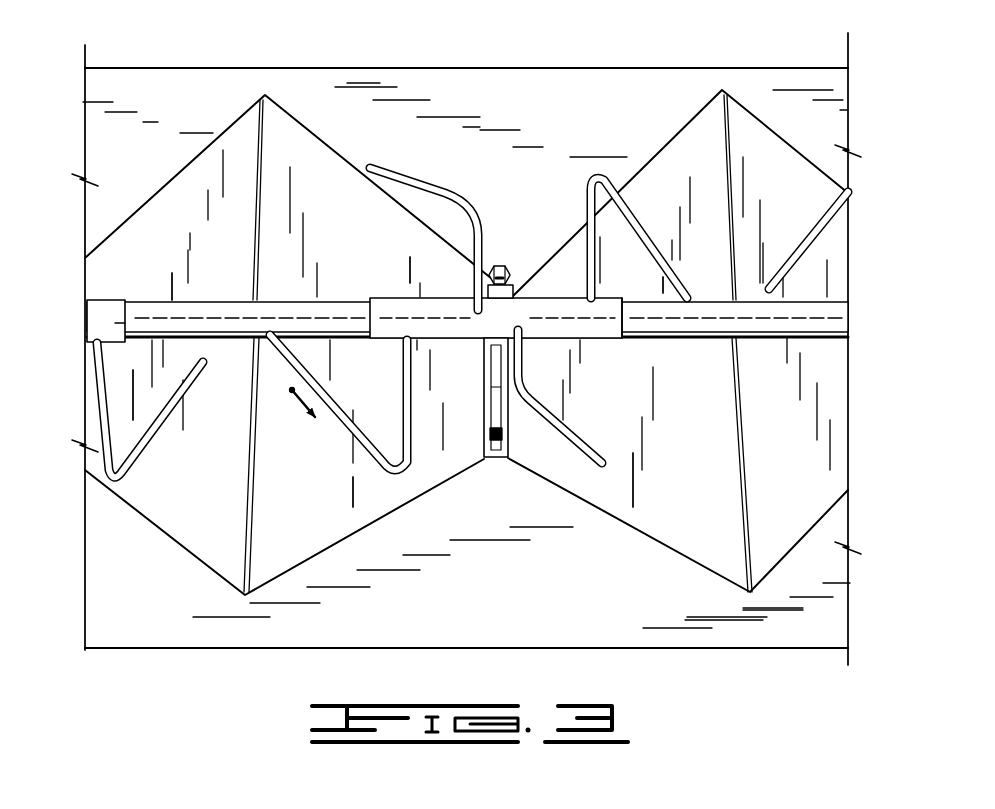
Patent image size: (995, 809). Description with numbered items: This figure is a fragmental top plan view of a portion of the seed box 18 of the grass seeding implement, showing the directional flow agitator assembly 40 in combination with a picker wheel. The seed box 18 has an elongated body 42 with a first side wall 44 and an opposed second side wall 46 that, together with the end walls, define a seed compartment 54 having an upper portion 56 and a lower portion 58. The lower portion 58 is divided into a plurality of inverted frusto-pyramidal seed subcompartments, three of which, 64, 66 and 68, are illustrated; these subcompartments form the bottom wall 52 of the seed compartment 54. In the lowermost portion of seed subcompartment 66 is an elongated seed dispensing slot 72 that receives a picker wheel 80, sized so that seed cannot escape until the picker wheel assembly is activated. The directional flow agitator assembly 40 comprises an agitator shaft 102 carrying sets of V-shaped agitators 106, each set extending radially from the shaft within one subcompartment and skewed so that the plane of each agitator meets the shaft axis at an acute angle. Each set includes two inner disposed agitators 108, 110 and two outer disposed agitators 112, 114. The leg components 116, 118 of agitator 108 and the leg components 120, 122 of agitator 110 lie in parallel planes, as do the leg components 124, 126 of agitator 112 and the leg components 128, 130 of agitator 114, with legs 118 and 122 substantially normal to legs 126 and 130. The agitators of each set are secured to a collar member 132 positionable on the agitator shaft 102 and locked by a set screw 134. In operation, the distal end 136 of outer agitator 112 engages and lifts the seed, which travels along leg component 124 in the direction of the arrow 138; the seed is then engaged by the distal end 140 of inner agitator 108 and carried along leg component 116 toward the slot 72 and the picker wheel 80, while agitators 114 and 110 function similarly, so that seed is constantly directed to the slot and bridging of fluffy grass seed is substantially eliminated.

The seed box 18 is at (650, 60).
The directional flow agitator assembly 40 is at (456, 346).
The elongated body 42 is at (639, 652).
The first side wall 44 is at (430, 603).
The second side wall 46 is at (484, 86).
The bottom wall 52 is at (454, 288).
The seed compartment 54 is at (548, 84).
The upper portion 56 is at (709, 78).
The lower portion 58 is at (367, 165).
The seed subcompartment 64 is at (94, 492).
The seed subcompartment 66 is at (467, 480).
The seed subcompartment 68 is at (841, 517).
The seed dispensing slot 72 is at (470, 430).
The picker wheel 80 is at (511, 440).
The agitator shaft 102 is at (165, 313).
The V-shaped agitators 106 is at (402, 296).
The inner disposed V-shaped agitator 108 is at (490, 242).
The inner disposed V-shaped agitator 110 is at (568, 396).
The outer disposed V-shaped agitator 112 is at (523, 326).
The outer disposed V-shaped agitator 114 is at (402, 318).
The leg component 116 is at (424, 217).
The leg component 118 is at (424, 217).
The leg component 120 is at (568, 396).
The leg component 122 is at (519, 372).
The leg component 124 is at (303, 368).
The leg component 126 is at (303, 368).
The leg component 128 is at (667, 275).
The leg component 130 is at (586, 247).
The collar member 132 is at (647, 333).
The set screw 134 is at (537, 258).
The distal end 136 is at (272, 330).
The arrow 138 is at (307, 415).
The distal end 140 is at (371, 163).